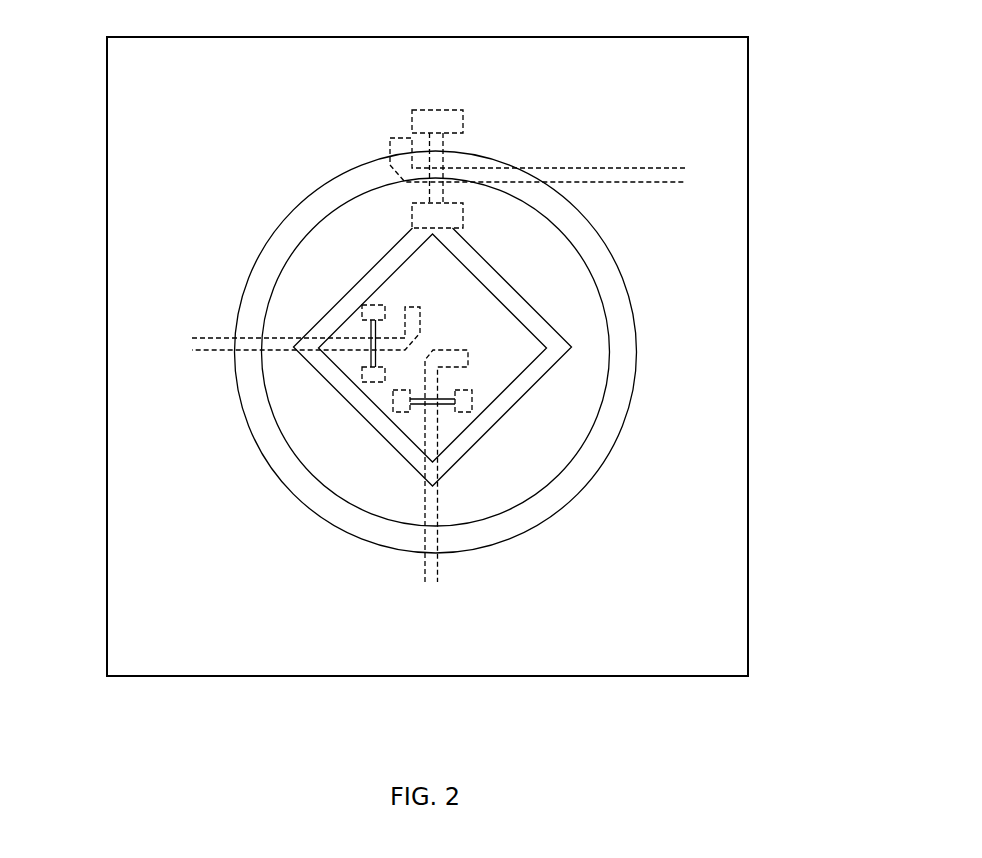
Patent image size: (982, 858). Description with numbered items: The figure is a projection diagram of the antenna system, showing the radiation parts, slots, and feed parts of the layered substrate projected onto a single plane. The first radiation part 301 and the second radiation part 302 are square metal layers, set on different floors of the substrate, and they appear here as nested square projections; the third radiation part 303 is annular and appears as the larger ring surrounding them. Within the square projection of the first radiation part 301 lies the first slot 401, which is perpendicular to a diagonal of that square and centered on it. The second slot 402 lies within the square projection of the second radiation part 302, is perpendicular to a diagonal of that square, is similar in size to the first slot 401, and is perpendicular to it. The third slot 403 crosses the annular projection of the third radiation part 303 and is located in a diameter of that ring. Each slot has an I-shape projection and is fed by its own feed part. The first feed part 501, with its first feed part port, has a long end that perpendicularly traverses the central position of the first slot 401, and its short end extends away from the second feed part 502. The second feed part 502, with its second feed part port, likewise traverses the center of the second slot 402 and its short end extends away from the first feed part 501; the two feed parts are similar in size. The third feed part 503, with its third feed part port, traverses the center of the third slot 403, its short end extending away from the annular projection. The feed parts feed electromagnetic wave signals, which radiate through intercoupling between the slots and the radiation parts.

The first radiation part 301 is at (545, 320).
The second radiation part 302 is at (498, 397).
The third radiation part 303 is at (582, 452).
The first slot 401 is at (363, 320).
The second slot 402 is at (393, 408).
The third slot 403 is at (443, 147).
The first feed part 501 is at (250, 337).
The second feed part 502 is at (437, 444).
The third feed part 503 is at (570, 170).